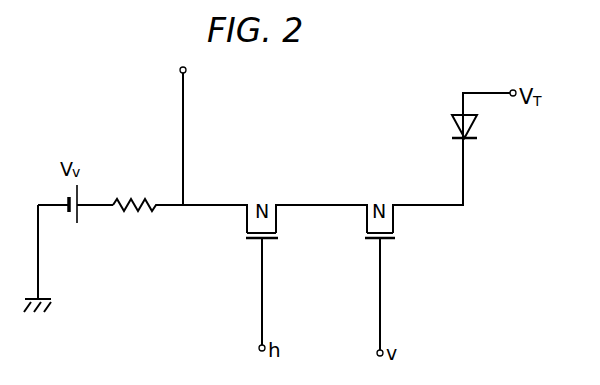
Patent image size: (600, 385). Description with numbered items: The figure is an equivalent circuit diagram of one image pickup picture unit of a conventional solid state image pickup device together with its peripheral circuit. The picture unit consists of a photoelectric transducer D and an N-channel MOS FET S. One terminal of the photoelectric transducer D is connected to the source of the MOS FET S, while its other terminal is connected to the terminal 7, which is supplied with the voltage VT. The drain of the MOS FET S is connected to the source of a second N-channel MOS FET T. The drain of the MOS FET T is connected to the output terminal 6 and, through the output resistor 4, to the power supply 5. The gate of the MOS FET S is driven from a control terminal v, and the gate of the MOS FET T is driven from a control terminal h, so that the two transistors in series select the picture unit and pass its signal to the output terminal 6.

The output resistor 4 is at (135, 220).
The power supply 5 is at (73, 225).
The output terminal 6 is at (186, 70).
The terminal 7 is at (513, 97).
The photoelectric transducer D is at (452, 125).
The N-channel MOS FET T is at (252, 240).
The N-channel MOS FET S is at (387, 241).